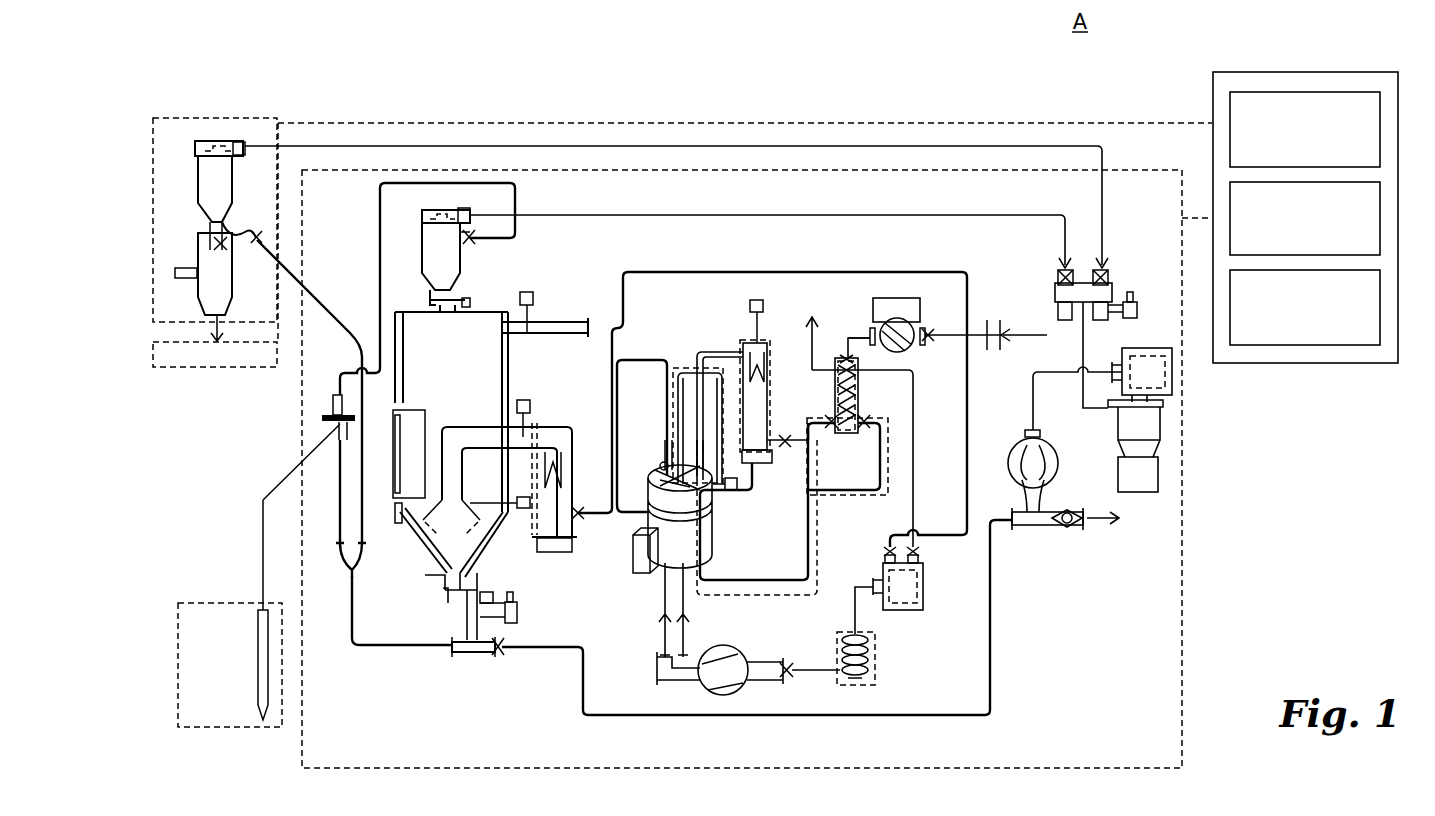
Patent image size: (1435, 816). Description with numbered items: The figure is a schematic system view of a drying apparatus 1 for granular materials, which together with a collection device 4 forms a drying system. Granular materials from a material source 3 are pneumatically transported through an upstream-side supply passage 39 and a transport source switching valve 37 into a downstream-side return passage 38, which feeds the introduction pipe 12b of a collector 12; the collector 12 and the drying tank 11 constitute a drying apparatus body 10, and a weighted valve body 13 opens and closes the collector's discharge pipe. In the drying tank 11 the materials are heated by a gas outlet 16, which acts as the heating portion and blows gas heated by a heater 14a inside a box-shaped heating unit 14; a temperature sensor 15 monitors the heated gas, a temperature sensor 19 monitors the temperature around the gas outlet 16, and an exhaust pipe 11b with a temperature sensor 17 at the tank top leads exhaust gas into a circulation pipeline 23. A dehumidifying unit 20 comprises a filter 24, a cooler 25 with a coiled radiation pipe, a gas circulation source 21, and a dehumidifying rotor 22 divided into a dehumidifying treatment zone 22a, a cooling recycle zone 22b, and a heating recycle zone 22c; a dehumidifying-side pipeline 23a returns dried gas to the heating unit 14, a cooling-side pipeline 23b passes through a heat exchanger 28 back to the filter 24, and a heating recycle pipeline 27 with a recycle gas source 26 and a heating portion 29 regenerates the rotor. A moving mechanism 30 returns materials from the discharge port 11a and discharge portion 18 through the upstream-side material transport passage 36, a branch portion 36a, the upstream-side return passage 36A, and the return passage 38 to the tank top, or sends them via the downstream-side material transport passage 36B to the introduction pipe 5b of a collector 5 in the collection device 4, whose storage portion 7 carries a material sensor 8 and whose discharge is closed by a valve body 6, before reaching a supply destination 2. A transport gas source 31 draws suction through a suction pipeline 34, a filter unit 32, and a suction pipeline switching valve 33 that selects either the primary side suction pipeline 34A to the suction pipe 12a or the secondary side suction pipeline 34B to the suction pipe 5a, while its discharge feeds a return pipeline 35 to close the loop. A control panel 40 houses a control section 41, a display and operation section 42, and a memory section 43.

The drying apparatus 1 is at (1206, 658).
The supply destination 2 is at (232, 367).
The material source 3 is at (222, 603).
The collection device 4 is at (203, 106).
The collector 5 is at (198, 181).
The suction pipe 5a is at (238, 142).
The introduction pipe 5b is at (245, 222).
The valve body 6 is at (222, 246).
The storage portion 7 is at (198, 291).
The material sensor 8 is at (184, 268).
The drying apparatus body 10 is at (481, 668).
The drying tank 11 is at (520, 365).
The discharge port 11a is at (457, 595).
The exhaust pipe 11b is at (566, 322).
The collector 12 is at (411, 226).
The suction pipe 12a is at (470, 211).
The introduction pipe 12b is at (471, 246).
The valve body 13 is at (440, 306).
The heating unit 14 is at (568, 427).
The heater 14a is at (580, 507).
The temperature sensor 15 is at (525, 400).
The gas outlet 16 is at (433, 525).
The temperature sensor 17 is at (530, 292).
The discharge portion 18 is at (530, 613).
The temperature sensor 19 is at (522, 509).
The dehumidifying unit 20 is at (700, 340).
The gas circulation source 21 is at (753, 661).
The dehumidifying rotor 22 is at (730, 552).
The dehumidifying treatment zone 22a is at (663, 462).
The cooling recycle zone 22b is at (662, 483).
The heating recycle zone 22c is at (716, 490).
The circulation pipeline 23 is at (790, 272).
The dehumidifying-side pipeline 23a is at (640, 360).
The cooling-side pipeline 23b is at (686, 625).
The filter 24 is at (923, 598).
The cooler 25 is at (886, 667).
The recycle gas source 26 is at (920, 350).
The heating recycle pipeline 27 is at (848, 336).
The heat exchanger 28 is at (835, 393).
The heating portion 29 is at (767, 343).
The moving mechanism 30 is at (1088, 562).
The transport gas source 31 is at (1036, 545).
The filter unit 32 is at (1145, 505).
The suction pipeline switching valve 33 is at (1138, 272).
The suction pipeline 34 is at (1034, 405).
The primary side suction pipeline 34A is at (1015, 215).
The secondary side suction pipeline 34B is at (948, 146).
The return pipeline 35 is at (992, 663).
The upstream-side material transport passage 36 is at (372, 648).
The upstream-side return passage 36A is at (342, 494).
The downstream-side material transport passage 36B is at (312, 292).
The branch portion 36a is at (350, 578).
The transport source switching valve 37 is at (311, 423).
The downstream-side return passage 38 is at (445, 183).
The upstream-side supply passage 39 is at (298, 475).
The control panel 40 is at (1306, 382).
The control section 41 is at (1230, 112).
The display and operation section 42 is at (1230, 205).
The memory section 43 is at (1340, 345).